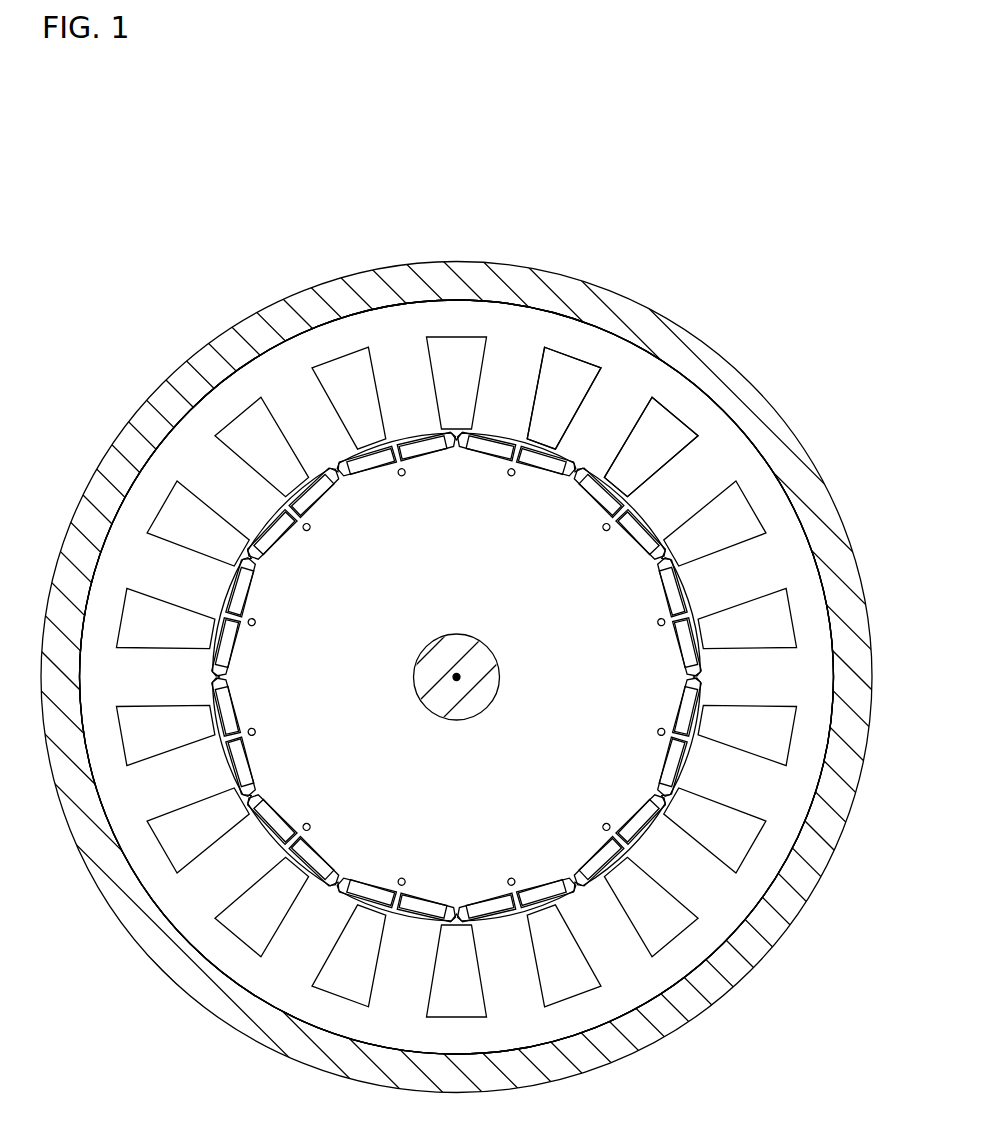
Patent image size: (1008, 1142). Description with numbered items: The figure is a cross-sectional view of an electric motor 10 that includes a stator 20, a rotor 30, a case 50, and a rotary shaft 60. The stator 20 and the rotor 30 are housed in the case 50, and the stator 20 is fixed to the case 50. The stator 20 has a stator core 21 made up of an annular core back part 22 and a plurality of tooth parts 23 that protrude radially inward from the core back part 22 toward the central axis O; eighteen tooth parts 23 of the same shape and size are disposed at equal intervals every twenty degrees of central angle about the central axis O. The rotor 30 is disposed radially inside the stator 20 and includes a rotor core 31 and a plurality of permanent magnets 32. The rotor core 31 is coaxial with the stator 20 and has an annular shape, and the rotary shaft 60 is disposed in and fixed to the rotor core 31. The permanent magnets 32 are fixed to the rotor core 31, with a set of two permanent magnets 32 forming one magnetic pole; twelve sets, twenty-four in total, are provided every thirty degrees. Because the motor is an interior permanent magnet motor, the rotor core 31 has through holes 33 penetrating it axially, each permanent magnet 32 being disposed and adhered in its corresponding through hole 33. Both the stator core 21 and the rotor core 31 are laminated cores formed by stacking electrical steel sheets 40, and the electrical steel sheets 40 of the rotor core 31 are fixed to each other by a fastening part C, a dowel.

The electric motor 10 is at (822, 130).
The stator 20 is at (752, 416).
The stator core 21 is at (682, 223).
The core back part 22 is at (648, 363).
The tooth parts 23 is at (600, 395).
The rotor 30 is at (456, 677).
The rotor core 31 is at (357, 863).
The permanent magnets 32 is at (540, 472).
The through holes 33 is at (488, 903).
The electrical steel sheets 40 is at (240, 390).
The case 50 is at (797, 467).
The rotary shaft 60 is at (488, 690).
The fastening part C is at (310, 529).
The central axis O is at (462, 673).